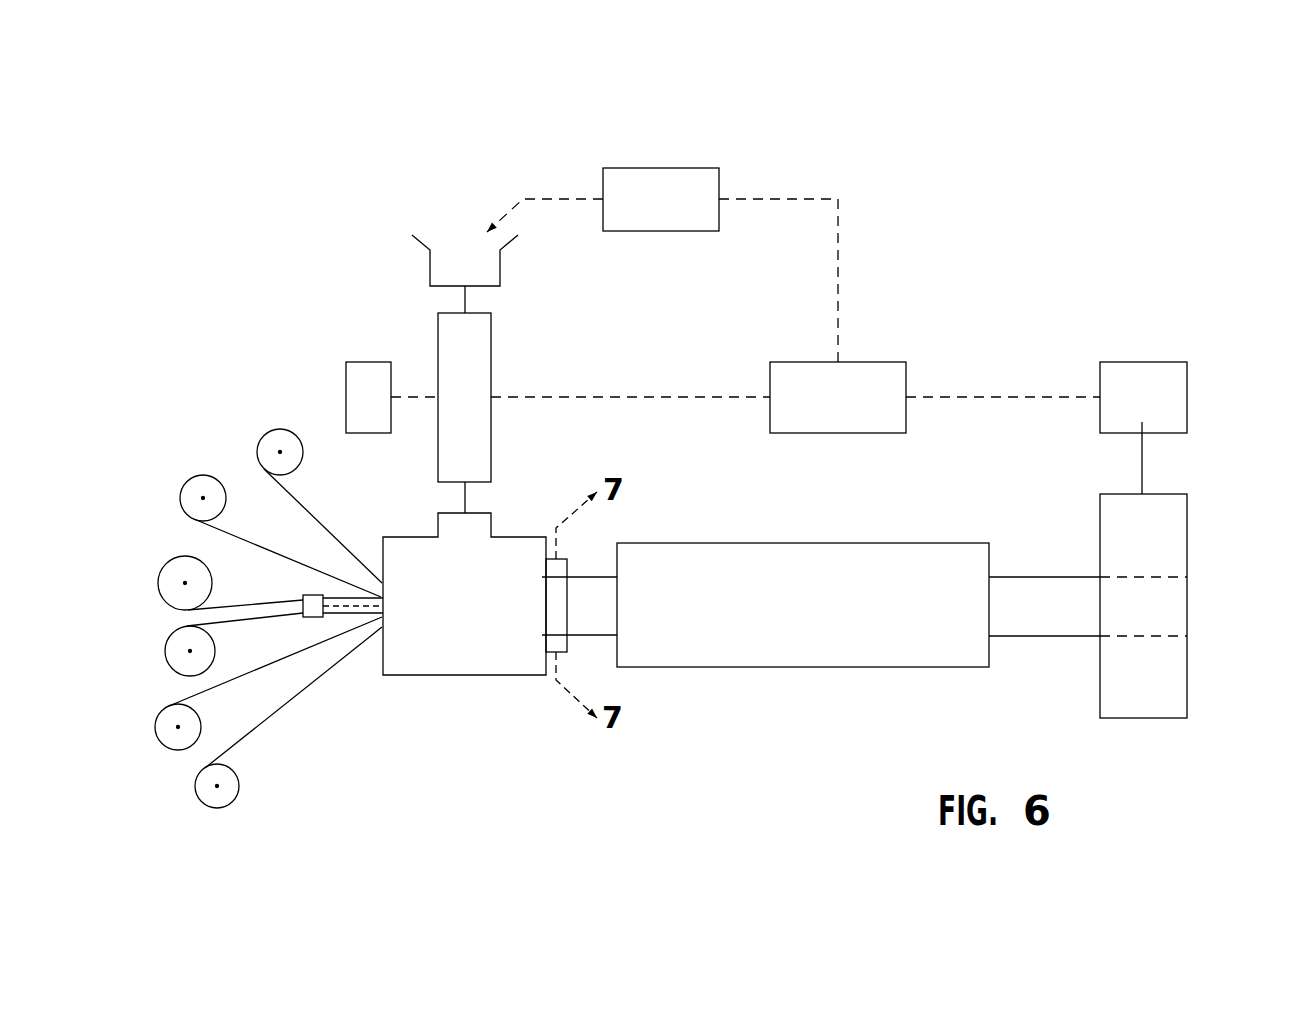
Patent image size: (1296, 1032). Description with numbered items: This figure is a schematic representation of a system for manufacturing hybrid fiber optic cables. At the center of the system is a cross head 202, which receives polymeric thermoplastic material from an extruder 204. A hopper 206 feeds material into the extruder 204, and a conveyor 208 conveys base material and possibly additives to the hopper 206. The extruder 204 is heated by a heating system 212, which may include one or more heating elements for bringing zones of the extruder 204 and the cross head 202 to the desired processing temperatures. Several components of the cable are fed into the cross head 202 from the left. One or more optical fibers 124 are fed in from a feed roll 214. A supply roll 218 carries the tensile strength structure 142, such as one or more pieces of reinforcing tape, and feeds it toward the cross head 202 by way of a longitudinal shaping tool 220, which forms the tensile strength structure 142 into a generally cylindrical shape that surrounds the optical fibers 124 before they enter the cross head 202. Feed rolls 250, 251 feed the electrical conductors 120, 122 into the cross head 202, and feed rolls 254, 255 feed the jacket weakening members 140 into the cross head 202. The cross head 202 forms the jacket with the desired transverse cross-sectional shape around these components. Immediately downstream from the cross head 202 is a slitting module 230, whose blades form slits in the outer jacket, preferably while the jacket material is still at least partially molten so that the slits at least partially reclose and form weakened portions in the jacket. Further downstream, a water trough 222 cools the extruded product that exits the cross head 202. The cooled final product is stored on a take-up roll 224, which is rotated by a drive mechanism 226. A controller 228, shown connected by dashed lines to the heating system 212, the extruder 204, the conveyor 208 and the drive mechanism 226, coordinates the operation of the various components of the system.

The electrical conductor 120 is at (345, 547).
The electrical conductor 122 is at (275, 712).
The optical fiber 124 is at (232, 606).
The jacket weakening member 140 is at (268, 550).
The tensile strength structure 142 is at (223, 623).
The cross head 202 is at (465, 675).
The extruder 204 is at (492, 350).
The hopper 206 is at (507, 251).
The conveyor 208 is at (719, 168).
The heating system 212 is at (346, 397).
The feed roll 214 is at (158, 583).
The supply roll 218 is at (165, 660).
The longitudinal shaping tool 220 is at (303, 598).
The water trough 222 is at (775, 543).
The take-up roll 224 is at (1187, 683).
The drive mechanism 226 is at (1167, 362).
The controller 228 is at (840, 362).
The slitting module 230 is at (567, 567).
The feed roll 250 is at (262, 433).
The feed roll 251 is at (232, 801).
The feed roll 254 is at (166, 750).
The feed roll 255 is at (185, 480).